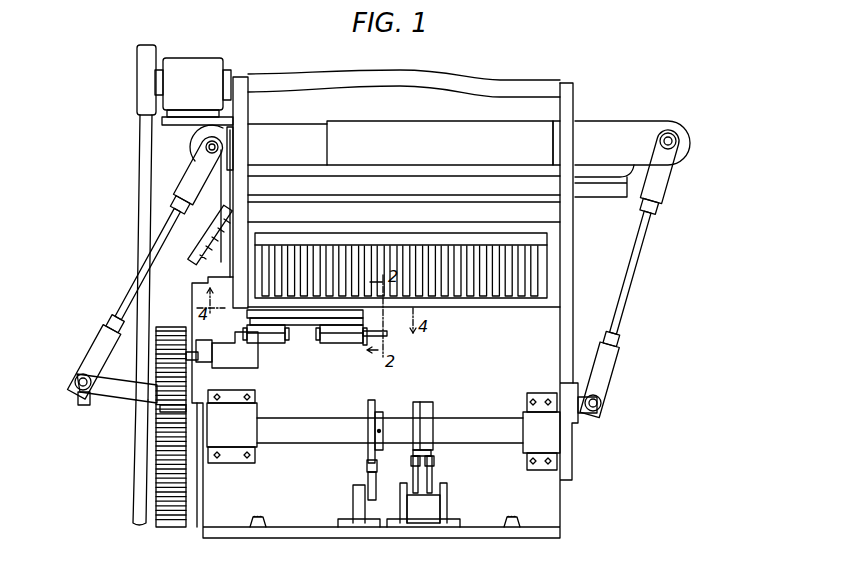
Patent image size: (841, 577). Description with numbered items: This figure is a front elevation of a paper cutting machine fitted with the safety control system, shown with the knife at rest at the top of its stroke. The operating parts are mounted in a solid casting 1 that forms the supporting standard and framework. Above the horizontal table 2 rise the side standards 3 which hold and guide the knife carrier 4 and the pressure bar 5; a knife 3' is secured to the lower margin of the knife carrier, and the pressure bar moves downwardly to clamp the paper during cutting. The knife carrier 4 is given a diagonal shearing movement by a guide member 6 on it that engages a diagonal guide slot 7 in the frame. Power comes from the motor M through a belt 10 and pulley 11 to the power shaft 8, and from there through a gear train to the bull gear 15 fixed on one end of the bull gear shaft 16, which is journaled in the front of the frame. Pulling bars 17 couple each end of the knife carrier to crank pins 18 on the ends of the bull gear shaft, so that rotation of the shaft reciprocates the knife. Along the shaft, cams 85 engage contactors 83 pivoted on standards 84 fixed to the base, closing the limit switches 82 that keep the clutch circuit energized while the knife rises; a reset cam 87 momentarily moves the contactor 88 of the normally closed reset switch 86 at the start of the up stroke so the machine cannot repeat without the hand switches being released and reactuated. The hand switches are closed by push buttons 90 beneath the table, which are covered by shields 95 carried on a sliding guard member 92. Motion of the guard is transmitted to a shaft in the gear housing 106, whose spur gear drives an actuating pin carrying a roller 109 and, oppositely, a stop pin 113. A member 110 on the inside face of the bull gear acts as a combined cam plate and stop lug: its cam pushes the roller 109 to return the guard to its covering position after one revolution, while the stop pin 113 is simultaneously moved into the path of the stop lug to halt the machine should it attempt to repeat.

The casting 1 is at (562, 497).
The horizontal table 2 is at (543, 307).
The side standards 3 is at (419, 215).
The knife 3' is at (604, 198).
The knife carrier 4 is at (625, 135).
The pressure bar 5 is at (418, 210).
The guide member 6 is at (220, 183).
The diagonal guide slot 7 is at (200, 232).
The power shaft 8 is at (197, 460).
The belt 10 is at (145, 138).
The pulley 11 is at (135, 480).
The bull gear 15 is at (158, 525).
The bull gear shaft 16 is at (297, 435).
The pulling bars 17 is at (135, 285).
The crank pins 18 is at (115, 398).
The limit switches 82 is at (410, 505).
The contactors 83 is at (433, 455).
The standards 84 is at (447, 505).
The cams 85 is at (413, 430).
The reset switch 86 is at (367, 510).
The reset cam 87 is at (372, 445).
The contactor 88 is at (365, 470).
The push buttons 90 is at (270, 343).
The guard member 92 is at (367, 342).
The shields 95 is at (262, 343).
The gear housing 106 is at (233, 363).
The roller 109 is at (170, 415).
The member 110 is at (160, 360).
The stop pin 113 is at (190, 347).
The motor M is at (187, 68).